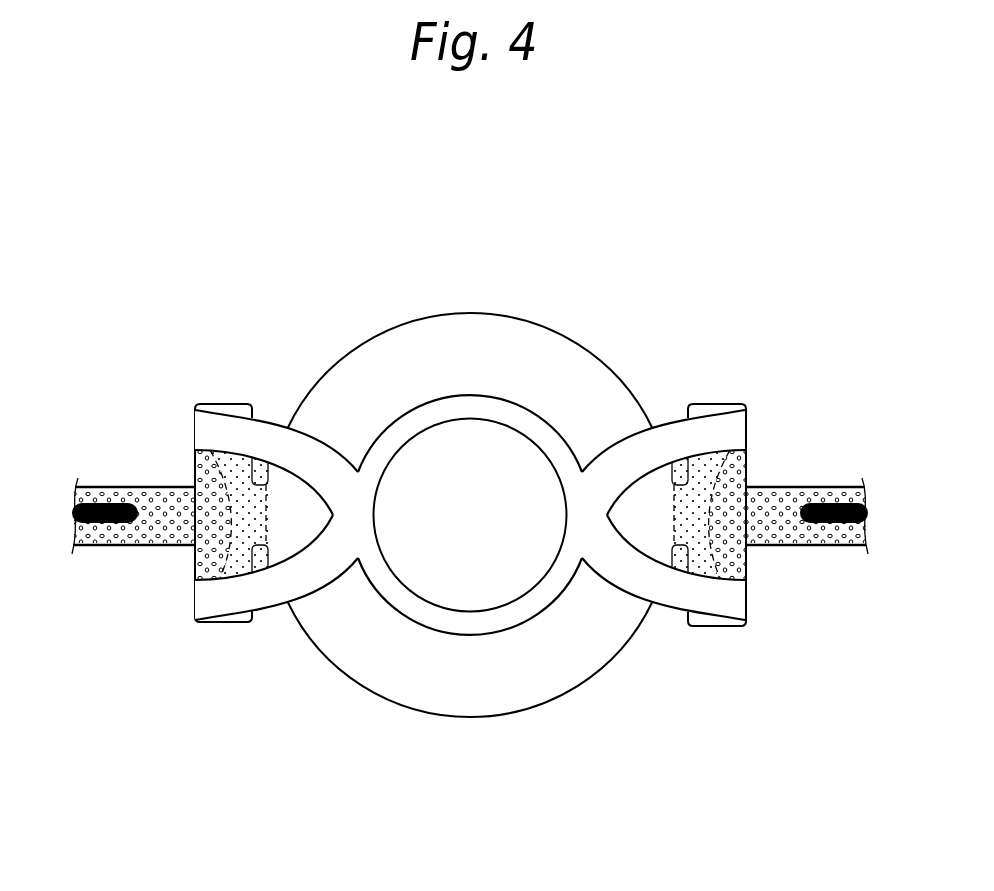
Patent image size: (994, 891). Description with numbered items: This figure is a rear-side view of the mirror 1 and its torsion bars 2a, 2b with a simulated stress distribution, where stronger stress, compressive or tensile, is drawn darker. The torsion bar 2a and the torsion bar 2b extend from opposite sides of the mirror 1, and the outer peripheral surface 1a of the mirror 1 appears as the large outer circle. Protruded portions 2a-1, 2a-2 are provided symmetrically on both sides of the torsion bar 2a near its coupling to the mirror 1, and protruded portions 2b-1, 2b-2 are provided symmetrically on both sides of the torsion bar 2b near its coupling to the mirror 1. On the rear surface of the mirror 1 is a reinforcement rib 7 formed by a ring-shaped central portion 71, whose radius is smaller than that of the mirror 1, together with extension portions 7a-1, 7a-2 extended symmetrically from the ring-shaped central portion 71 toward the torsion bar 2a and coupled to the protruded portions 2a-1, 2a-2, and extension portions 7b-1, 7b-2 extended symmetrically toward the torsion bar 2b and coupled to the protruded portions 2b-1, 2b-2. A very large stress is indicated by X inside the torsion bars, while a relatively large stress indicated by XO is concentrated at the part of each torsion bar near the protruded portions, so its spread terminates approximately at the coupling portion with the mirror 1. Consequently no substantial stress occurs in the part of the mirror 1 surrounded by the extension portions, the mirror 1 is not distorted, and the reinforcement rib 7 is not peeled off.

The mirror 1 is at (470, 469).
The outer peripheral surface of main body 1a is at (478, 340).
The reinforcement rib 7 is at (466, 523).
The ring-shaped central portion 71 is at (528, 625).
The extension portion 7a-1 is at (728, 600).
The extension portion 7a-2 is at (622, 437).
The extension portion 7b-1 is at (213, 596).
The extension portion 7b-2 is at (212, 432).
The torsion bar 2a is at (772, 522).
The protruded portion 2a-1 is at (713, 628).
The protruded portion 2a-2 is at (715, 406).
The torsion bar 2b is at (170, 503).
The protruded portion 2b-1 is at (222, 623).
The protruded portion 2b-2 is at (222, 403).
The very large stress X is at (98, 497).
The relatively large stress XO is at (243, 566).